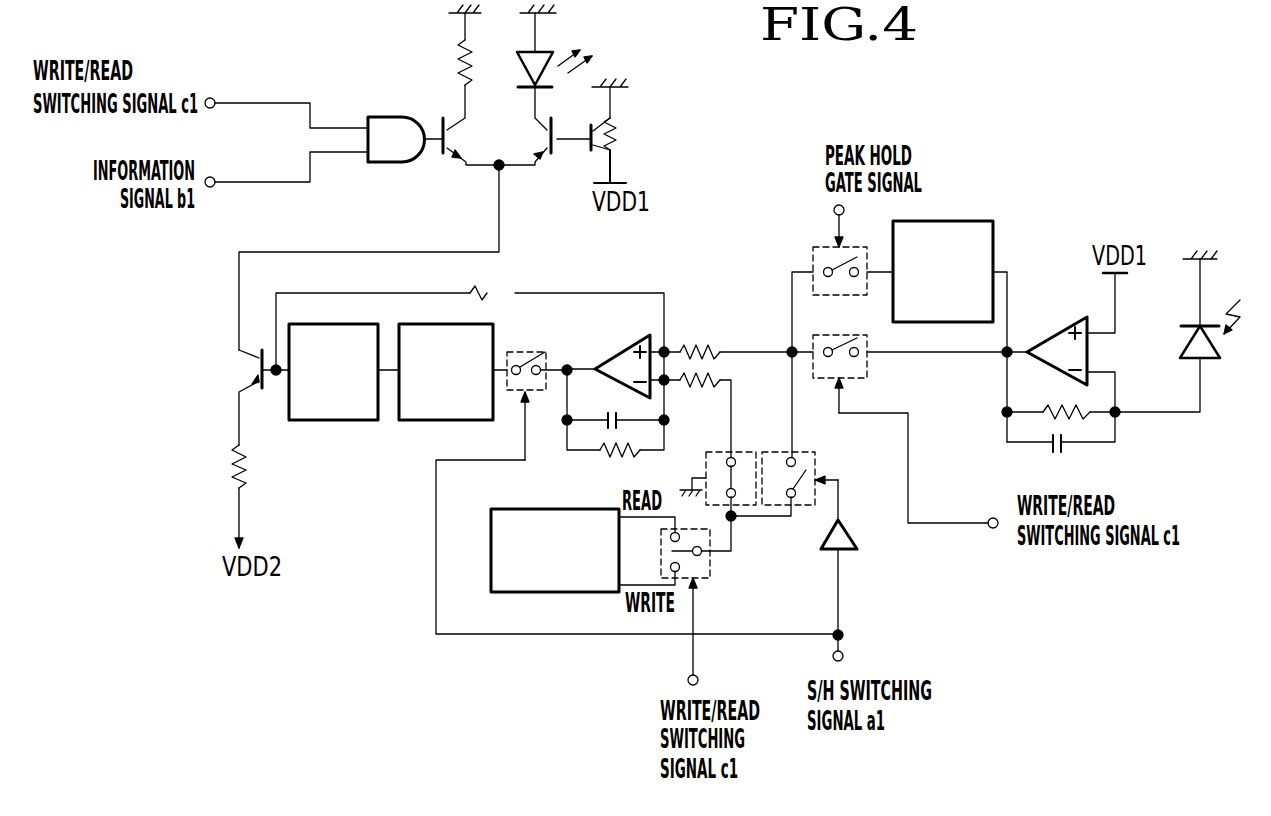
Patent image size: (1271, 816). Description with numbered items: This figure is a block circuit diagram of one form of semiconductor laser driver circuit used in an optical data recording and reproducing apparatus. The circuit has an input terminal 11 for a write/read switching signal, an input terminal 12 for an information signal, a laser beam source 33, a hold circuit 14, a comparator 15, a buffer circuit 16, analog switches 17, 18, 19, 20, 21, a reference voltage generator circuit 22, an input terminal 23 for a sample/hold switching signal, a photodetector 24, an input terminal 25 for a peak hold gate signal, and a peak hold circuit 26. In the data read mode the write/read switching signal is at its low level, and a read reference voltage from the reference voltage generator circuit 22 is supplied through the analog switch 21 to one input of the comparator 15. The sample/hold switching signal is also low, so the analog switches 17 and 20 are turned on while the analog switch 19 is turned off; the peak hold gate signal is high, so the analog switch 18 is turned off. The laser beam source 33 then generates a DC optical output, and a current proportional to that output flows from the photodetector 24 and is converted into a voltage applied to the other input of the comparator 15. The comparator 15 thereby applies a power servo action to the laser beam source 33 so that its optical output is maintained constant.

The input terminal for write/read switching signal 11 is at (285, 98).
The input terminal for information signal 12 is at (290, 188).
The hold circuit 14 is at (497, 341).
The comparator 15 is at (652, 342).
The buffer circuit 16 is at (318, 421).
The analog switch 17 is at (543, 344).
The analog switch 18 is at (813, 255).
The analog switch 19 is at (815, 452).
The analog switch 20 is at (867, 372).
The analog switch 21 is at (710, 570).
The reference voltage generator circuit 22 is at (497, 568).
The input terminal for sample/hold switching signal 23 is at (845, 657).
The photodetector 24 is at (1185, 318).
The input terminal for peak hold gate signal 25 is at (834, 210).
The peak hold circuit 26 is at (995, 233).
The laser beam source 33 is at (552, 52).